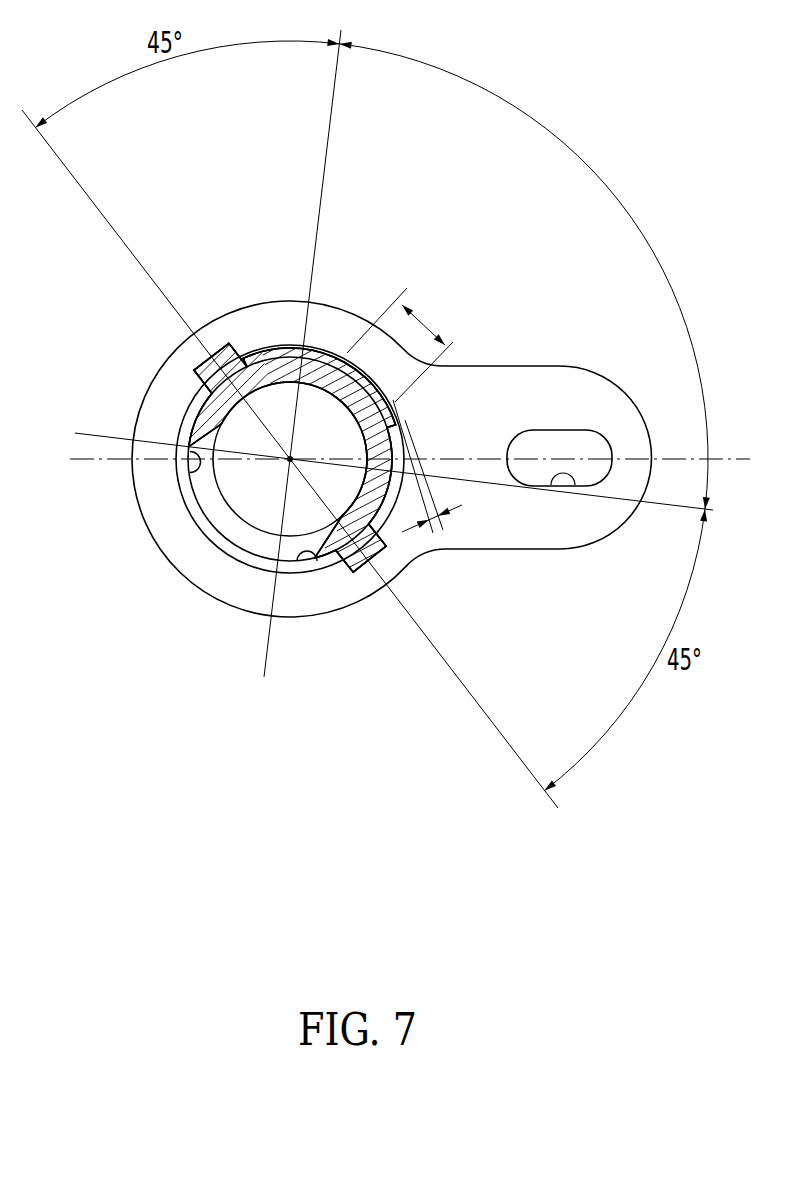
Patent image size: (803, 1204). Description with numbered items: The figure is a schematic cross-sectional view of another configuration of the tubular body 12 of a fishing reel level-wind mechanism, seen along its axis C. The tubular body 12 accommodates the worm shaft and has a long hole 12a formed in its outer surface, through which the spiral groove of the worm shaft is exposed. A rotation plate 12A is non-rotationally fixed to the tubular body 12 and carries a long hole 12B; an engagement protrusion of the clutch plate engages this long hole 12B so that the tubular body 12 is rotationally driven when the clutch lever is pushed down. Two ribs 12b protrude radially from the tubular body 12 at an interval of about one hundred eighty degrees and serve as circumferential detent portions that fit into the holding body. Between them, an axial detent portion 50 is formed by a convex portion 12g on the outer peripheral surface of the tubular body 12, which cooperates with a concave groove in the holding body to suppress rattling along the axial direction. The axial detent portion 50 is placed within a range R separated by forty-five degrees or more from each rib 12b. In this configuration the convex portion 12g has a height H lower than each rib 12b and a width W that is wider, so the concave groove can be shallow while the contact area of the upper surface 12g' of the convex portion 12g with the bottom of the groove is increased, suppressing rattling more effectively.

The tubular body 12 is at (263, 352).
The rotation plate 12A is at (553, 390).
The long hole 12B is at (575, 486).
The long hole 12a is at (192, 470).
The rib 12b is at (203, 372).
The convex portion 12g is at (311, 410).
The axial detent portion 50 is at (362, 365).
The upper surface 12g' is at (370, 388).
The axis C is at (290, 459).
The range R is at (650, 247).
The width W is at (400, 345).
The height H is at (433, 473).